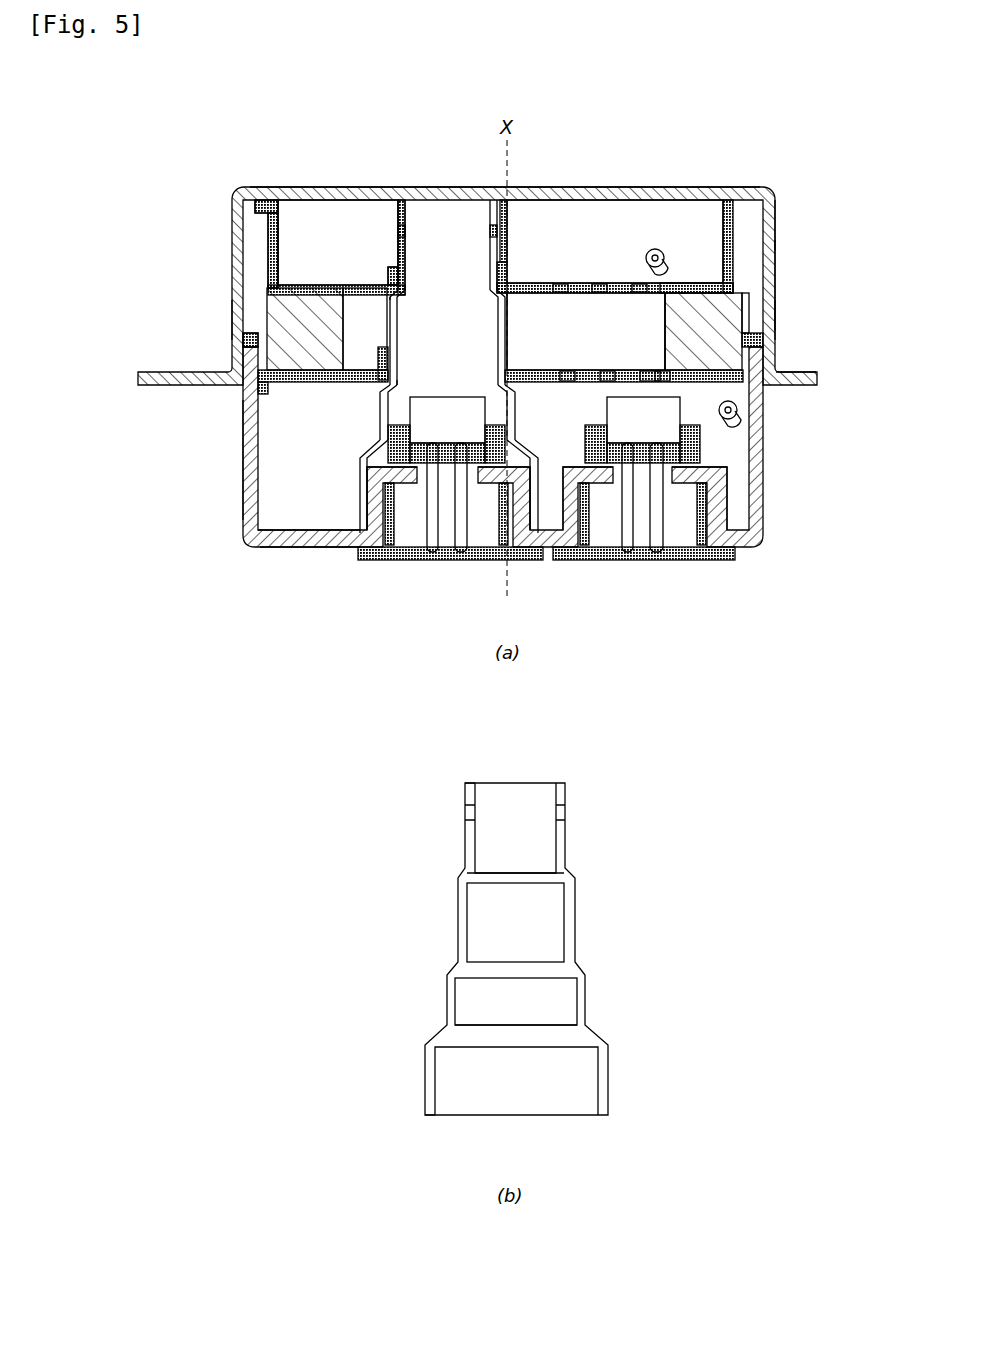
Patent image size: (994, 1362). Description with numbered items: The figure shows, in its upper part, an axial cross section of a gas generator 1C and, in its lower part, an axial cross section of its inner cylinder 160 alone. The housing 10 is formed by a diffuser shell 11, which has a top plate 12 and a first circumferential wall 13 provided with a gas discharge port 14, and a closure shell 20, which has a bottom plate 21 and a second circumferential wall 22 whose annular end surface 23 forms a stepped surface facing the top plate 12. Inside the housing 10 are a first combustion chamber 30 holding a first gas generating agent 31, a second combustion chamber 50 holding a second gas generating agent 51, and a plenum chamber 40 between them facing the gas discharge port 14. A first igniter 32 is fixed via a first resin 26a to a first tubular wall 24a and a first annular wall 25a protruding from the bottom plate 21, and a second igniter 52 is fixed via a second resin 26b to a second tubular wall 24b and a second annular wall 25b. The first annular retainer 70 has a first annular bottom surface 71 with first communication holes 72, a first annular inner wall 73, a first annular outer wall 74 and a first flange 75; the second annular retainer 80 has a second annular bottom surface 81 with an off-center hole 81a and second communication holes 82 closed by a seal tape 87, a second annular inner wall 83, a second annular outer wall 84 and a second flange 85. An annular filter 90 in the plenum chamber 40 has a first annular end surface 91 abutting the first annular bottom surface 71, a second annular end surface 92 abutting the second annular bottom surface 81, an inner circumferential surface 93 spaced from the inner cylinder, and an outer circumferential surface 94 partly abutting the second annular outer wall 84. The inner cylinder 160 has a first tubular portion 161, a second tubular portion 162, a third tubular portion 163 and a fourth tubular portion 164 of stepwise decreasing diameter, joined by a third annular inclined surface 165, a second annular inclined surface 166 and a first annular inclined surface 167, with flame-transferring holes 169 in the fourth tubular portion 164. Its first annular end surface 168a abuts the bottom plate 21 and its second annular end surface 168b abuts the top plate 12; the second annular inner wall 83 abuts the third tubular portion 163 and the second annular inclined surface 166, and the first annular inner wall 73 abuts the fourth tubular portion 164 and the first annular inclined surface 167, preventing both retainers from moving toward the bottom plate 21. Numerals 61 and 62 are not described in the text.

The gas generator 1C is at (650, 165).
The housing 10 is at (872, 343).
The diffuser shell 11 is at (770, 352).
The top plate 12 is at (325, 187).
The first circumferential wall 13 is at (776, 290).
The gas discharge port 14 is at (776, 262).
The closure shell 20 is at (765, 408).
The bottom plate 21 is at (298, 548).
The second circumferential wall 22 is at (243, 465).
The annular end surface 23 is at (776, 320).
The first tubular wall 24a is at (375, 510).
The second tubular wall 24b is at (718, 507).
The first annular wall 25a is at (360, 457).
The second annular wall 25b is at (672, 470).
The first resin 26a is at (388, 440).
The second resin 26b is at (585, 430).
The first combustion chamber 30 is at (615, 241).
The first gas generating agent 31 is at (665, 252).
The first igniter 32 is at (466, 388).
The plenum chamber 40 is at (327, 329).
The second combustion chamber 50 is at (309, 514).
The second gas generating agent 51 is at (727, 422).
The second igniter 52 is at (593, 400).
The bottom sheet 61 is at (360, 556).
The projection 62 is at (396, 210).
The first annular retainer 70 is at (301, 266).
The first annular bottom surface 71 is at (580, 283).
The first communication holes 72 is at (603, 283).
The first annular inner wall 73 is at (507, 272).
The first annular outer wall 74 is at (262, 212).
The first flange 75 is at (266, 200).
The second annular retainer 80 is at (284, 395).
The second annular bottom surface 81 is at (582, 370).
The hole 81a is at (403, 292).
The second communication holes 82 is at (610, 370).
The second annular inner wall 83 is at (390, 357).
The second annular outer wall 84 is at (258, 390).
The second flange 85 is at (243, 335).
The seal tape 87 is at (537, 368).
The annular filter 90 is at (650, 312).
The first annular end surface 91 is at (692, 283).
The second annular end surface 92 is at (688, 382).
The inner circumferential surface 93 is at (665, 330).
The outer circumferential surface 94 is at (747, 304).
The inner cylinder 160 is at (470, 619).
The first tubular portion 161 is at (358, 476).
The second tubular portion 162 is at (380, 405).
The third tubular portion 163 is at (400, 308).
The fourth tubular portion 164 is at (398, 215).
The third annular inclined surface 165 is at (595, 1032).
The second annular inclined surface 166 is at (607, 970).
The first annular inclined surface 167 is at (570, 876).
The first annular end surface 168a is at (428, 1116).
The second annular end surface 168b is at (468, 782).
The flame-transferring holes 169 is at (395, 230).